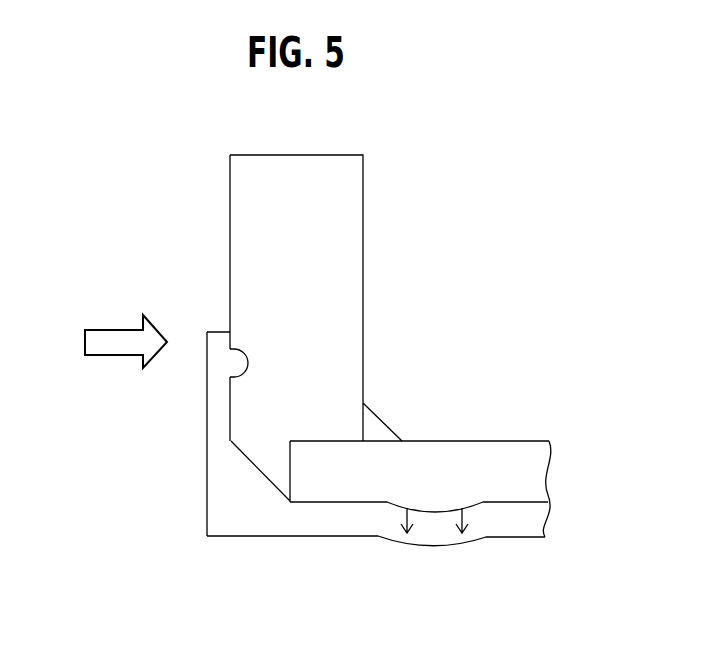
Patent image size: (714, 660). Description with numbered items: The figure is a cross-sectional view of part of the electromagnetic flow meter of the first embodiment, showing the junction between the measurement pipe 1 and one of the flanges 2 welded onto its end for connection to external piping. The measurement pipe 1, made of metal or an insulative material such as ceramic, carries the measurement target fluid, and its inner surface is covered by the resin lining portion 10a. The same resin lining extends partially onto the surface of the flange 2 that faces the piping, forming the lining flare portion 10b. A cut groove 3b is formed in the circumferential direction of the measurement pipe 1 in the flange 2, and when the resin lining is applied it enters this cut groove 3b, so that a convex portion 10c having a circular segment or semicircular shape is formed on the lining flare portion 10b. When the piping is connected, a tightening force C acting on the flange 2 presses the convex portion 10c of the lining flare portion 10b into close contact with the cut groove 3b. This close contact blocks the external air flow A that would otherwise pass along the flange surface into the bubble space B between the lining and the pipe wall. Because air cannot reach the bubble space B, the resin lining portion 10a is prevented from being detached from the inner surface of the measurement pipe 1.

The measurement pipe 1 is at (518, 441).
The flange 2 is at (332, 238).
The cut groove 3b is at (247, 362).
The resin lining portion 10a is at (525, 537).
The lining flare portion 10b is at (207, 452).
The convex portion 10c is at (232, 367).
The external air flow A is at (243, 363).
The bubble space B is at (438, 508).
The tightening force C is at (110, 341).